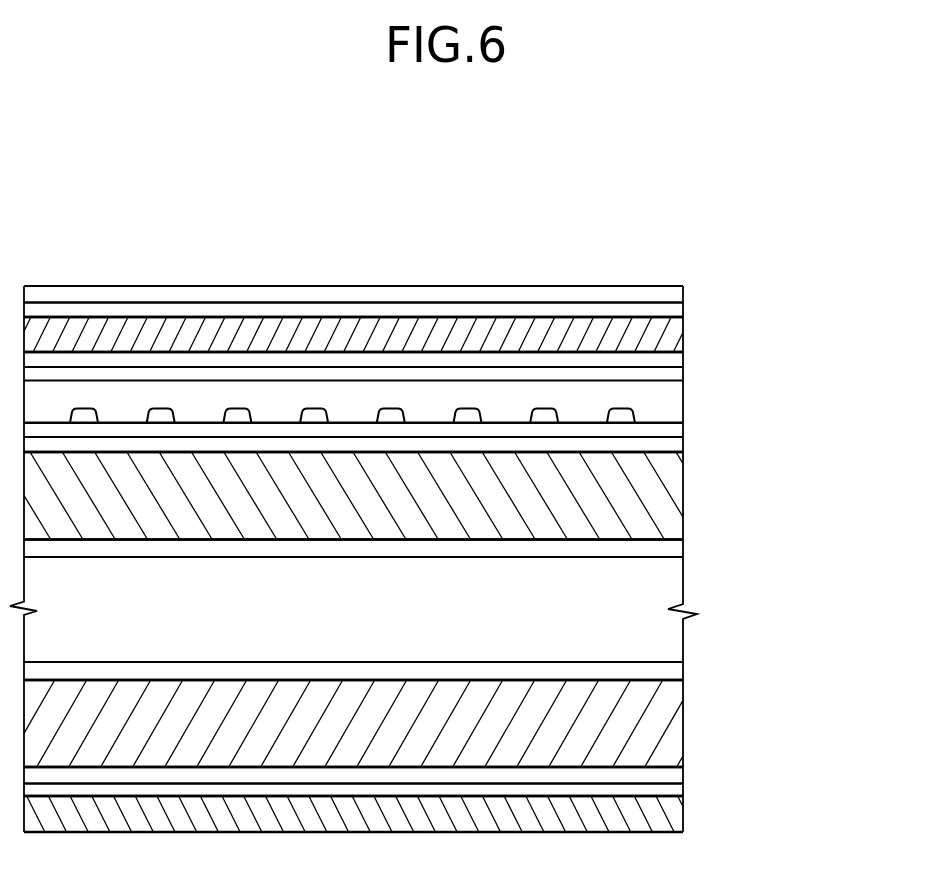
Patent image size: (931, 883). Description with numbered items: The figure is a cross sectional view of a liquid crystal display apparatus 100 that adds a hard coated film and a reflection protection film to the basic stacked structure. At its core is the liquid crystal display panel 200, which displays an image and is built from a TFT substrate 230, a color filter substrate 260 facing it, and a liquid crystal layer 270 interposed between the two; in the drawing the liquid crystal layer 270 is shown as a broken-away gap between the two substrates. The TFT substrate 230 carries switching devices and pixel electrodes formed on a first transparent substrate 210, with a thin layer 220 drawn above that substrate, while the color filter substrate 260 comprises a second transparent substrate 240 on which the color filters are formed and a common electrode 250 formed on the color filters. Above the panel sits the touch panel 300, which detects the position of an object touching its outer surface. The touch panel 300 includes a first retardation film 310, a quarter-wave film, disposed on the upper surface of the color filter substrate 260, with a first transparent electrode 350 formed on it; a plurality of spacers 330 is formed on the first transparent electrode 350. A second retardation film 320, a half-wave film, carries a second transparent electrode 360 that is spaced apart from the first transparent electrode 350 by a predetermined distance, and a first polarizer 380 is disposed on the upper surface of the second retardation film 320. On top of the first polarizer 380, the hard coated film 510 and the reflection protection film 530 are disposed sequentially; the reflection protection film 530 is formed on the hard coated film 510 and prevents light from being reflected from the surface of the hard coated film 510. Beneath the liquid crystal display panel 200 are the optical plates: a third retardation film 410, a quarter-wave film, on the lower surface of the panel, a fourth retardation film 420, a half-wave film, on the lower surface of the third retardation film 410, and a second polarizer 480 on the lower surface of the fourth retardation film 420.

The liquid crystal display apparatus 100 is at (372, 204).
The liquid crystal display panel 200 is at (837, 502).
The first transparent substrate 210 is at (683, 728).
The lower electrode 220 is at (683, 672).
The TFT substrate 230 is at (767, 655).
The second transparent substrate 240 is at (683, 500).
The common electrode 250 is at (683, 548).
The color filter substrate 260 is at (766, 477).
The liquid crystal layer 270 is at (676, 632).
The touch panel 300 is at (766, 325).
The first retardation film 310 is at (683, 444).
The second retardation film 320 is at (683, 360).
The spacers 330 is at (543, 408).
The first transparent electrode 350 is at (683, 430).
The second transparent electrode 360 is at (683, 381).
The first polarizer 380 is at (683, 330).
The third retardation film 410 is at (683, 775).
The fourth retardation film 420 is at (683, 790).
The second polarizer 480 is at (683, 822).
The hard coated film 510 is at (683, 311).
The reflection protection film 530 is at (683, 291).